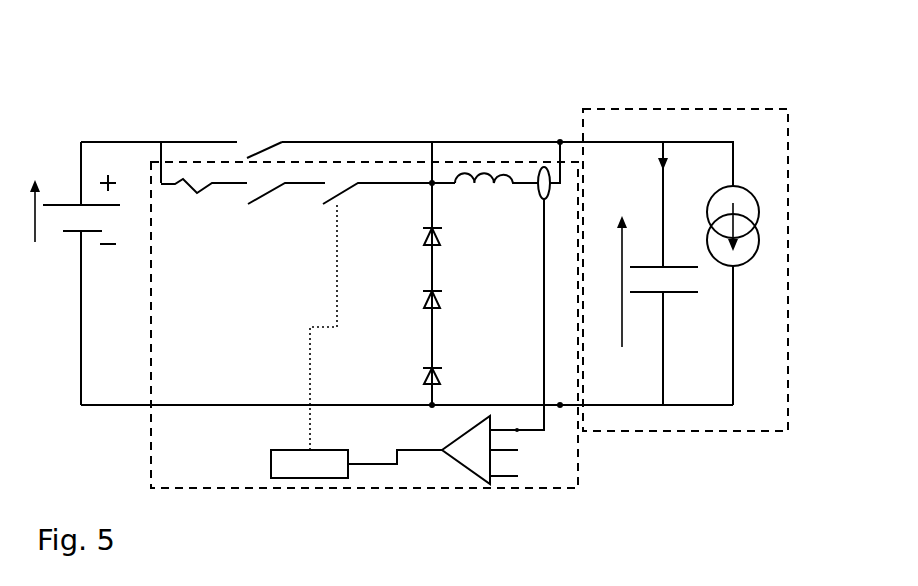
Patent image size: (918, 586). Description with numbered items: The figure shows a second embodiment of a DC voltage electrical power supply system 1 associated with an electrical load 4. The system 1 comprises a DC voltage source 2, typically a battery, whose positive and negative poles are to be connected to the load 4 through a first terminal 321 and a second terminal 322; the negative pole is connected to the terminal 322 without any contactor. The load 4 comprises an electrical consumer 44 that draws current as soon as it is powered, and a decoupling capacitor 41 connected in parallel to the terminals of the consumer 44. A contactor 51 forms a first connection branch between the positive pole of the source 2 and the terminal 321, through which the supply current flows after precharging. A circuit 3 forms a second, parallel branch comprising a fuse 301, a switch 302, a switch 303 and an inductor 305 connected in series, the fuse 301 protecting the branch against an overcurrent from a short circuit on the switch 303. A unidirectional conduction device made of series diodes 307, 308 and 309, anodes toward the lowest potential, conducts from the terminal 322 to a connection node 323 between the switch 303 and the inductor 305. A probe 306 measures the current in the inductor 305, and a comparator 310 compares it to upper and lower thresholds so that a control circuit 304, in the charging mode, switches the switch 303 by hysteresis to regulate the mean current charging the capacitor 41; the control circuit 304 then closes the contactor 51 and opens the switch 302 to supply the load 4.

The DC voltage electrical power supply system 1 is at (100, 72).
The DC voltage source 2 is at (65, 247).
The circuit 3 is at (363, 160).
The electrical load 4 is at (687, 440).
The decoupling capacitor 41 is at (650, 245).
The electrical consumer 44 is at (750, 188).
The contactor 51 is at (262, 143).
The fuse 301 is at (190, 202).
The switch 302 is at (262, 202).
The switch 303 is at (355, 200).
The control circuit 304 is at (270, 463).
The inductor 305 is at (487, 170).
The probe 306 is at (543, 165).
The diode 307 is at (443, 236).
The diode 308 is at (443, 302).
The diode 309 is at (443, 378).
The comparator 310 is at (468, 468).
The first terminal 321 is at (560, 140).
The second terminal 322 is at (560, 408).
The connection node 323 is at (430, 143).